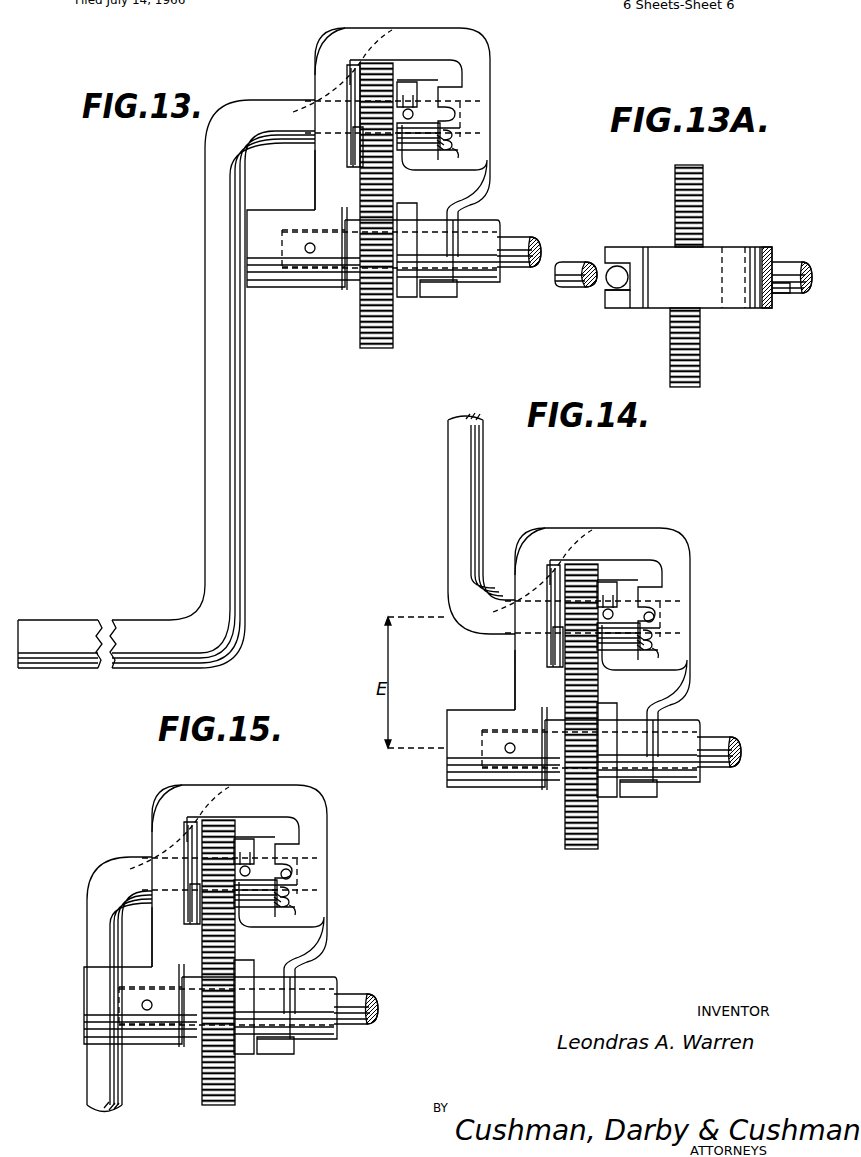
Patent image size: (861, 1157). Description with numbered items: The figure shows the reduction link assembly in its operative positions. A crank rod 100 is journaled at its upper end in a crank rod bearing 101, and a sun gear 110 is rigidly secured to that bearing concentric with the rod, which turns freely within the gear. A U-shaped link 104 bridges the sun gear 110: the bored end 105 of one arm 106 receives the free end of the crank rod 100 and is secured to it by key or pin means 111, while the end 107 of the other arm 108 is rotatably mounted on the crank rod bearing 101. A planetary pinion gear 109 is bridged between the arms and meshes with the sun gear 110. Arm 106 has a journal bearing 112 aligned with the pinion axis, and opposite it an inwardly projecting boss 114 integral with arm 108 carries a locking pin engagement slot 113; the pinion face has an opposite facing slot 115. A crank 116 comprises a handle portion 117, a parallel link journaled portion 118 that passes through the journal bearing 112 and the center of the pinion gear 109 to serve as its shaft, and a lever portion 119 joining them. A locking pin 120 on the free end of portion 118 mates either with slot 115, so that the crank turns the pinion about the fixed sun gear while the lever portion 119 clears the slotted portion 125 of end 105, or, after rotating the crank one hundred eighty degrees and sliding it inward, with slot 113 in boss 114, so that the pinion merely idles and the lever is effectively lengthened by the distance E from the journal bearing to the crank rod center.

In FIG. 13, the crank rod 100 is at (524, 240).
In FIG. 13A, the crank rod 100 is at (802, 272).
In FIG. 14, the crank rod 100 is at (706, 746).
In FIG. 15, the crank rod 100 is at (350, 997).
In FIG. 13, the crank rod bearing 101 is at (474, 230).
In FIG. 13A, the crank rod bearing 101 is at (782, 300).
In FIG. 14, the crank rod bearing 101 is at (690, 722).
In FIG. 15, the crank rod bearing 101 is at (318, 977).
In FIG. 13, the U-shaped link 104 is at (493, 63).
In FIG. 13A, the U-shaped link 104 is at (712, 306).
In FIG. 14, the U-shaped link 104 is at (623, 615).
In FIG. 15, the U-shaped link 104 is at (251, 862).
In FIG. 13, the bored end 105 is at (291, 210).
In FIG. 13A, the bored end 105 is at (637, 298).
In FIG. 14, the bored end 105 is at (500, 700).
In FIG. 15, the bored end 105 is at (137, 972).
In FIG. 13, the arm 106 is at (318, 78).
In FIG. 14, the arm 106 is at (520, 560).
In FIG. 15, the arm 106 is at (158, 830).
In FIG. 13, the end 107 is at (445, 292).
In FIG. 14, the end 107 is at (652, 734).
In FIG. 15, the end 107 is at (289, 991).
In FIG. 13, the arm 108 is at (470, 88).
In FIG. 14, the arm 108 is at (664, 587).
In FIG. 15, the arm 108 is at (308, 828).
In FIG. 13, the planetary pinion gear 109 is at (400, 70).
In FIG. 13A, the planetary pinion gear 109 is at (703, 246).
In FIG. 14, the planetary pinion gear 109 is at (590, 568).
In FIG. 15, the planetary pinion gear 109 is at (240, 839).
In FIG. 13, the sun gear 110 is at (360, 333).
In FIG. 13A, the sun gear 110 is at (690, 385).
In FIG. 14, the sun gear 110 is at (563, 782).
In FIG. 15, the sun gear 110 is at (202, 1068).
In FIG. 13, the key or pin means 111 is at (310, 254).
In FIG. 14, the key or pin means 111 is at (510, 756).
In FIG. 15, the key or pin means 111 is at (147, 1010).
In FIG. 13, the journal bearing 112 is at (290, 104).
In FIG. 14, the journal bearing 112 is at (490, 622).
In FIG. 15, the journal bearing 112 is at (108, 878).
In FIG. 13, the locking pin engagement slot 113 is at (455, 115).
In FIG. 14, the locking pin engagement slot 113 is at (655, 618).
In FIG. 15, the locking pin engagement slot 113 is at (292, 873).
In FIG. 13, the inwardly projecting boss 114 is at (460, 150).
In FIG. 14, the inwardly projecting boss 114 is at (660, 650).
In FIG. 15, the inwardly projecting boss 114 is at (294, 903).
In FIG. 13, the locking pin engagement slot 115 is at (410, 110).
In FIG. 14, the locking pin engagement slot 115 is at (611, 608).
In FIG. 15, the locking pin engagement slot 115 is at (247, 867).
In FIG. 13, the crank 116 is at (197, 394).
In FIG. 13, the handle portion 117 is at (70, 628).
In FIG. 13, the link journaled portion 118 is at (398, 32).
In FIG. 14, the link journaled portion 118 is at (560, 525).
In FIG. 15, the link journaled portion 118 is at (196, 800).
In FIG. 13, the lever portion 119 is at (205, 452).
In FIG. 13A, the lever portion 119 is at (575, 290).
In FIG. 14, the lever portion 119 is at (448, 486).
In FIG. 15, the lever portion 119 is at (88, 1062).
In FIG. 13, the locking pin 120 is at (435, 176).
In FIG. 14, the locking pin 120 is at (655, 603).
In FIG. 15, the locking pin 120 is at (282, 907).
In FIG. 13, the slotted portion 125 is at (262, 215).
In FIG. 13A, the slotted portion 125 is at (613, 300).
In FIG. 14, the slotted portion 125 is at (458, 707).
In FIG. 15, the slotted portion 125 is at (94, 990).